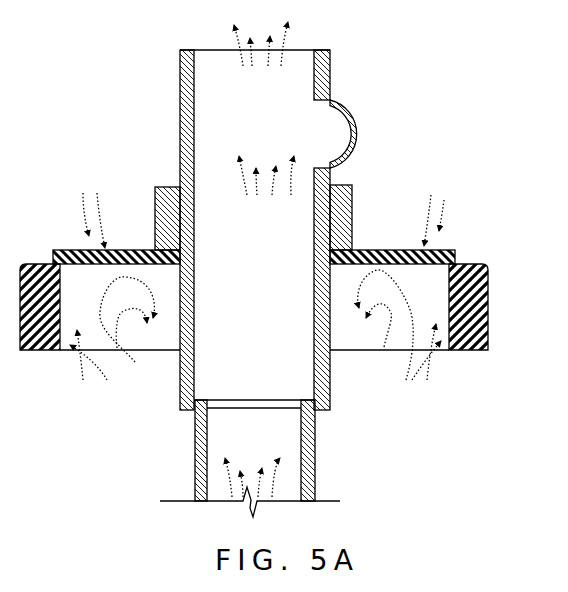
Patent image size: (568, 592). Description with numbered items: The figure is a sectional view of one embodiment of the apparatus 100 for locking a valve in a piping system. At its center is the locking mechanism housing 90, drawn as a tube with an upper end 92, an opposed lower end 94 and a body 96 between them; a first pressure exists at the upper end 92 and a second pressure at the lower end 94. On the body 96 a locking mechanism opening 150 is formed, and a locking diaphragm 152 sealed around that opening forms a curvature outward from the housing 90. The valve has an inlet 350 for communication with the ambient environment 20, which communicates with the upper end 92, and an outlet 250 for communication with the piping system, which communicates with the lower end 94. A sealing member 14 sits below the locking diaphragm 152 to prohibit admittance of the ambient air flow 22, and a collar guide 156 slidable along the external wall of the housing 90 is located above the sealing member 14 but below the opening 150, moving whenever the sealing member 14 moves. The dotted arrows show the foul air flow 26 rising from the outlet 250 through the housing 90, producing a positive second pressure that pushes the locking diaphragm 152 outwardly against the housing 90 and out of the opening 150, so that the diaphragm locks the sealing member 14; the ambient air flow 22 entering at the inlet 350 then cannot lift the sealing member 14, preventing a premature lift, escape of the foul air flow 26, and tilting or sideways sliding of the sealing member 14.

The apparatus 100 is at (392, 57).
The locking mechanism housing 90 is at (167, 112).
The upper end 92 is at (180, 50).
The lower end 94 is at (332, 392).
The body 96 is at (180, 160).
The locking mechanism opening 150 is at (330, 92).
The locking diaphragm 152 is at (357, 127).
The collar guide 156 is at (352, 197).
The sealing member 14 is at (455, 250).
The inlet 350 is at (462, 352).
The outlet 250 is at (312, 448).
The ambient air flow 22 is at (86, 380).
The foul air flow 26 is at (290, 23).
The ambient environment 20 is at (133, 452).